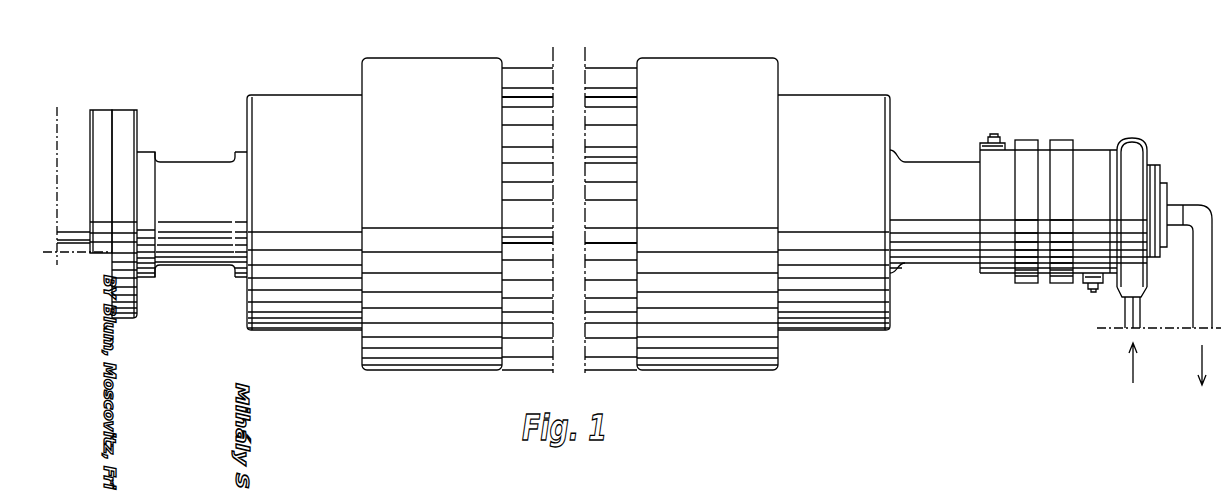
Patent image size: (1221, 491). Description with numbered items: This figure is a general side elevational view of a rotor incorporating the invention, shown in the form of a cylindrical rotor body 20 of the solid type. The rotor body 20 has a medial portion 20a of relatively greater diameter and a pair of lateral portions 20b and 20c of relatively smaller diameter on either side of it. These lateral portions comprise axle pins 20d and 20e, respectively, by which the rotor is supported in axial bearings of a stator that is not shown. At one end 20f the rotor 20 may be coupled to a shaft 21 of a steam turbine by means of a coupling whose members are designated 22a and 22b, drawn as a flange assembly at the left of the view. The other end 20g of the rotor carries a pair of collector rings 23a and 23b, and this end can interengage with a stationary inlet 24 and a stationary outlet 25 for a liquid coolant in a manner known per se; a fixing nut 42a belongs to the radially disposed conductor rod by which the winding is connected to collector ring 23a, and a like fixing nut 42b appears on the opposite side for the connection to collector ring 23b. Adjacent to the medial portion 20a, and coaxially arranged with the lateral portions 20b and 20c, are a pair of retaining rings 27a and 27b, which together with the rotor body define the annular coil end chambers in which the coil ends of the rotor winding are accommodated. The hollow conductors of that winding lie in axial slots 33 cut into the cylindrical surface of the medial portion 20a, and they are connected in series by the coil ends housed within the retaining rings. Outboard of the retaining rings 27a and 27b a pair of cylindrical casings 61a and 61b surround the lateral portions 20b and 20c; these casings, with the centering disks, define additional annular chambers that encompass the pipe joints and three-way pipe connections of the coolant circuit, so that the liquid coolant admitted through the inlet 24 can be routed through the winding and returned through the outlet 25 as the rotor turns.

The rotor body 20 is at (611, 66).
The medial portion 20a is at (526, 78).
The lateral portion 20b is at (897, 158).
The lateral portion 20c is at (240, 158).
The axle pin 20d is at (942, 255).
The axle pin 20e is at (193, 255).
The rotor end 20f is at (143, 160).
The rotor end 20g is at (1113, 165).
The shaft 21 is at (72, 167).
The coupling member 22a is at (102, 118).
The coupling member 22b is at (122, 118).
The collector ring 23a is at (1027, 140).
The collector ring 23b is at (1057, 285).
The stationary inlet 24 is at (1135, 270).
The stationary outlet 25 is at (1178, 205).
The retaining ring 27a is at (701, 64).
The retaining ring 27b is at (418, 63).
The axial slot 33 is at (512, 238).
The fixing nut 42a is at (994, 140).
The clamp 42b is at (1090, 288).
The cylindrical casing 61a is at (821, 101).
The cylindrical casing 61b is at (283, 101).